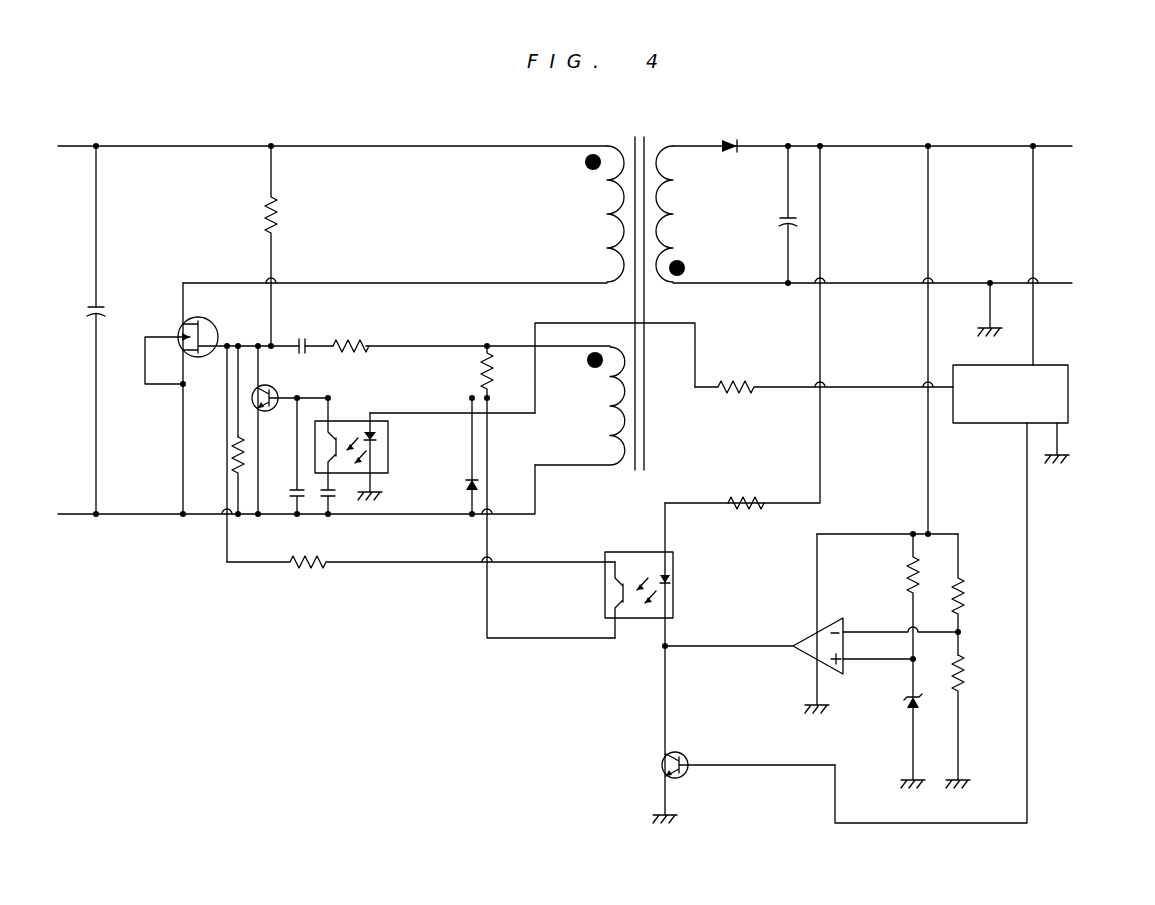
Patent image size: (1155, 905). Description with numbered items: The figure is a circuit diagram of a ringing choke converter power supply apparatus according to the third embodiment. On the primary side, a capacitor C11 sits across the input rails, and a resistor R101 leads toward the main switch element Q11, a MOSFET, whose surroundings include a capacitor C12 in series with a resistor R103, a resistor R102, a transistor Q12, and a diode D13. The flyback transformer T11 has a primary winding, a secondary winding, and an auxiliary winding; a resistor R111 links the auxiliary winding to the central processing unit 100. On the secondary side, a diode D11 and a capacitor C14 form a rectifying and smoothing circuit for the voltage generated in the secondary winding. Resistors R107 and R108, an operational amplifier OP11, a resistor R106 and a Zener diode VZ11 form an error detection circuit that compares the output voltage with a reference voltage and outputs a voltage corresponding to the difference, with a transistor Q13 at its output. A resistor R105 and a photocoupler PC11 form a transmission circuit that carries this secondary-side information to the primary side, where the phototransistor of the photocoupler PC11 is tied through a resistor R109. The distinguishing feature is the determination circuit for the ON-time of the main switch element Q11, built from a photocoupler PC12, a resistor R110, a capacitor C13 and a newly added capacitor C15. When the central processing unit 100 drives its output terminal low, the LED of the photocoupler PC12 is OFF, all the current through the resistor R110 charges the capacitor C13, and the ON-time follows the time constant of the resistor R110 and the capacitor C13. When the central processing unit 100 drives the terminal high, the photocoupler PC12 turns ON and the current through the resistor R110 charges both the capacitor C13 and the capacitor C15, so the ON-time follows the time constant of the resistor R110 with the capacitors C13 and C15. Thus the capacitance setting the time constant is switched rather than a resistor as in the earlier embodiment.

The capacitor C11 is at (75, 330).
The resistor R101 is at (242, 247).
The main switch element Q11 is at (182, 398).
The capacitor C12 is at (301, 335).
The resistor R103 is at (354, 335).
The resistor R102 is at (230, 452).
The transistor Q12 is at (290, 389).
The capacitor C13 is at (288, 501).
The capacitor C15 is at (337, 501).
The photocoupler PC12 is at (388, 443).
The resistor R110 is at (460, 372).
The diode D13 is at (451, 454).
The resistor R109 is at (421, 576).
The transformer T11 is at (628, 290).
The diode D11 is at (731, 132).
The capacitor C14 is at (766, 214).
The resistor R111 is at (824, 399).
The resistor R105 is at (742, 490).
The CPU 100 is at (1068, 393).
The photocoupler PC11 is at (639, 576).
The operational amplifier OP11 is at (811, 623).
The resistor R106 is at (884, 615).
The resistor R107 is at (985, 594).
The resistor R108 is at (982, 721).
The Zener diode VZ11 is at (887, 739).
The transistor Q13 is at (725, 734).